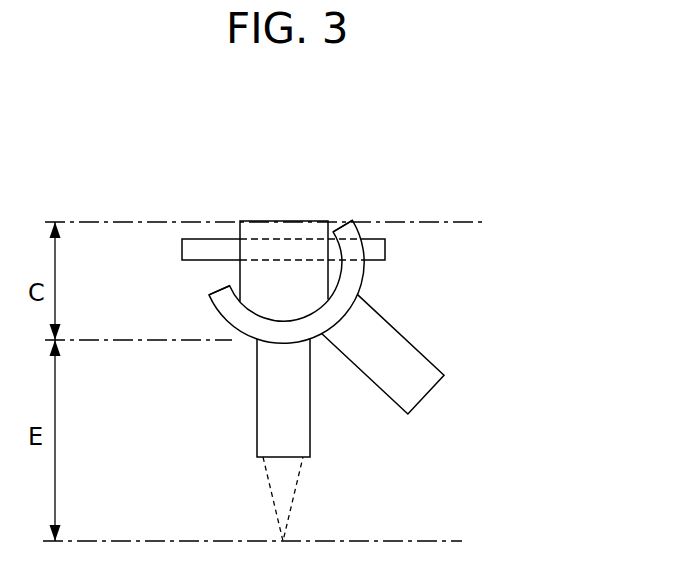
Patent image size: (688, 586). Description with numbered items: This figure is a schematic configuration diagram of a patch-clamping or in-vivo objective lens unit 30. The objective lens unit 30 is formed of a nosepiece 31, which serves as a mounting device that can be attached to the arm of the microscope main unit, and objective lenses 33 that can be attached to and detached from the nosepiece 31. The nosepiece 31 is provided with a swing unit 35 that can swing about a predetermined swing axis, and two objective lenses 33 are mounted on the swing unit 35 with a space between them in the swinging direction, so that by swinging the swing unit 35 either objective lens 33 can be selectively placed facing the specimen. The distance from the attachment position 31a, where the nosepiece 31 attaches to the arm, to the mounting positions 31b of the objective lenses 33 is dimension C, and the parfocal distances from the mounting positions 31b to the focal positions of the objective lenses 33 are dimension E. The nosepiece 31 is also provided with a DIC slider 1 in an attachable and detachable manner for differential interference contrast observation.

The DIC slider 1 is at (202, 243).
The objective lens unit 30 is at (546, 176).
The nosepiece 31 is at (331, 210).
The attachment position 31a is at (265, 220).
The mounting positions 31b is at (368, 302).
The objective lens 33 is at (270, 435).
The swing unit 35 is at (353, 275).